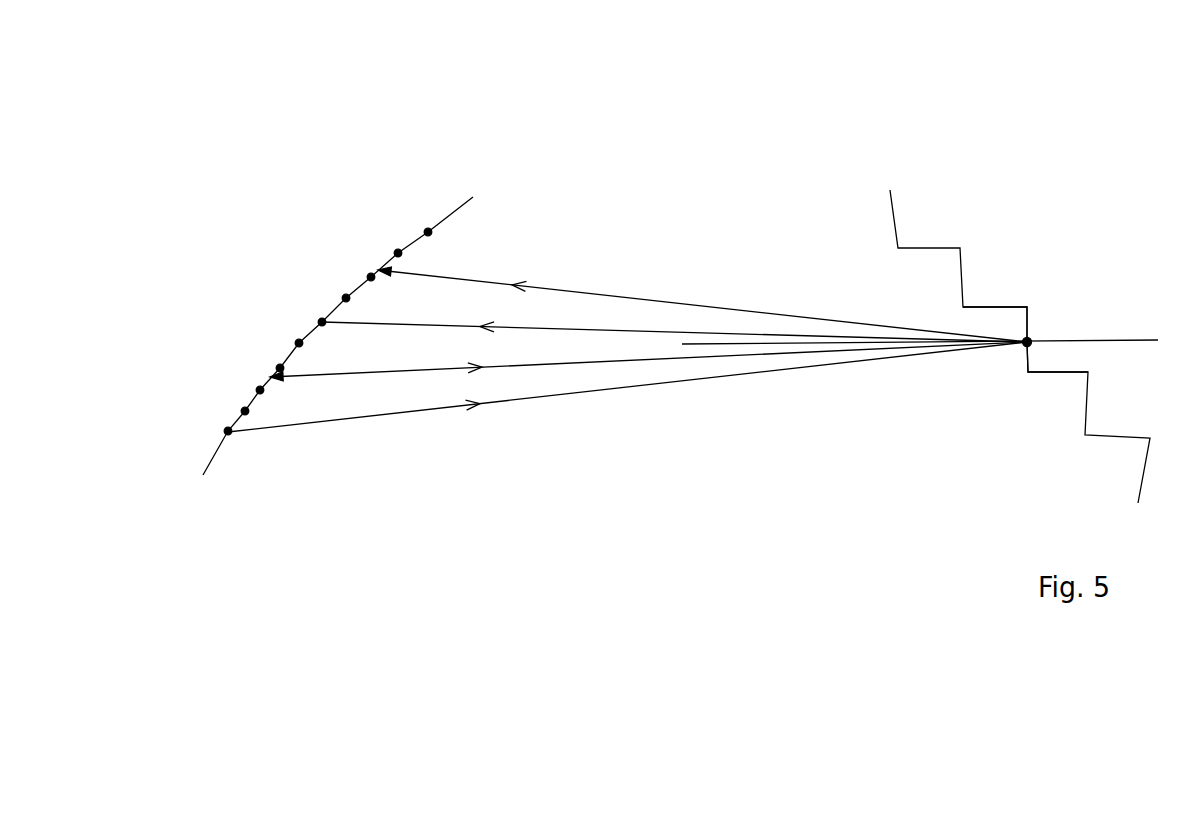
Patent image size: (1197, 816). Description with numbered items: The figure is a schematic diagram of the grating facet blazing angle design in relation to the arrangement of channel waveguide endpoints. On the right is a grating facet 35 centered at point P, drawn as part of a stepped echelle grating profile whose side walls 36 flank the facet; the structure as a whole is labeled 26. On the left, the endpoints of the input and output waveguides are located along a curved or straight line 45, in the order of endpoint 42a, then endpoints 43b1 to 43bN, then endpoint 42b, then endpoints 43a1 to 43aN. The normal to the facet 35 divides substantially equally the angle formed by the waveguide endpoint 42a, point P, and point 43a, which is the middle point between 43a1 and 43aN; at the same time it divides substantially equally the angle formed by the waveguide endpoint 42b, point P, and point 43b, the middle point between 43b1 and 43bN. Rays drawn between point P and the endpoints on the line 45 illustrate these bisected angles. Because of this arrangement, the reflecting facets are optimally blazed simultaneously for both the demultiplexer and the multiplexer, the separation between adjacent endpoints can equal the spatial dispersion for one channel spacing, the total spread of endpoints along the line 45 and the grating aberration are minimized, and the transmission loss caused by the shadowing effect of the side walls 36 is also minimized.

The collimator / mask with pinhole aperture 26 is at (975, 220).
The side walls 36 is at (1067, 373).
The grating facet 35 is at (1025, 362).
The curved or straight line 45 is at (470, 205).
The waveguide endpoint 42a is at (228, 432).
The waveguide endpoint 42b is at (322, 322).
The middle point 43a is at (382, 265).
The waveguide endpoint 43a1 is at (346, 298).
The waveguide endpoint 43aN is at (428, 229).
The middle point 43b is at (268, 377).
The waveguide endpoint 43b1 is at (247, 409).
The waveguide endpoint 43bN is at (300, 343).